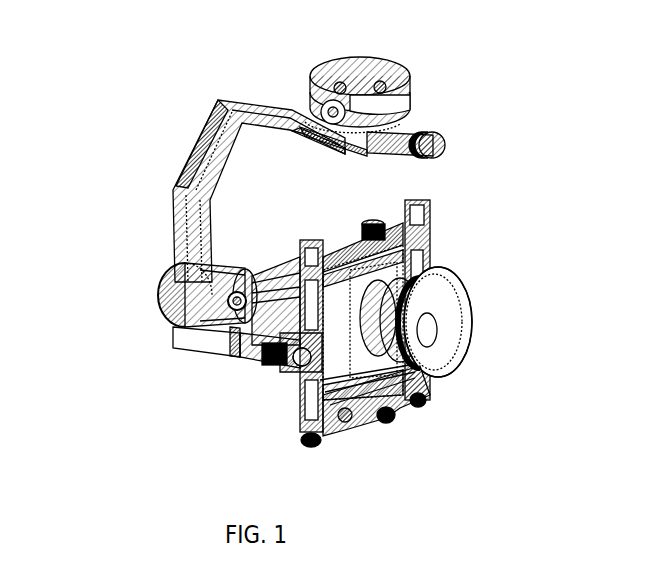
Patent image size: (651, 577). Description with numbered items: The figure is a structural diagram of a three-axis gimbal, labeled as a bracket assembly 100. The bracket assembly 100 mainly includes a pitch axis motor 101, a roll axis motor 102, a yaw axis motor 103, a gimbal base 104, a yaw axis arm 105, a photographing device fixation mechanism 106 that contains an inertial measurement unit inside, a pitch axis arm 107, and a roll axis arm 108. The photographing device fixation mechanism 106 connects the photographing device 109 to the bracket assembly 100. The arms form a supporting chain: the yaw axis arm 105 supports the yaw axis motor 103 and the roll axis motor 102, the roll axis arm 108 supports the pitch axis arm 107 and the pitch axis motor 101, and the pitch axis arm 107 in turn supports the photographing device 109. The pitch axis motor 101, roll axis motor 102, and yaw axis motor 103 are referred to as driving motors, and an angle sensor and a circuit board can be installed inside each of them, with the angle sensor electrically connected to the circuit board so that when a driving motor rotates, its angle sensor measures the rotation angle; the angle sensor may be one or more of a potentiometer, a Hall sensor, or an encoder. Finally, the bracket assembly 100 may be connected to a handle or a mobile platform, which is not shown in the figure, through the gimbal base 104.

The bracket assembly 100 is at (315, 223).
The pitch axis motor 101 is at (445, 262).
The roll axis motor 102 is at (157, 275).
The yaw axis motor 103 is at (415, 99).
The gimbal base 104 is at (355, 62).
The yaw axis arm 105 is at (175, 141).
The photographing device fixation mechanism 106 is at (385, 398).
The pitch axis arm 107 is at (295, 405).
The roll axis arm 108 is at (192, 362).
The photographing device 109 is at (445, 346).